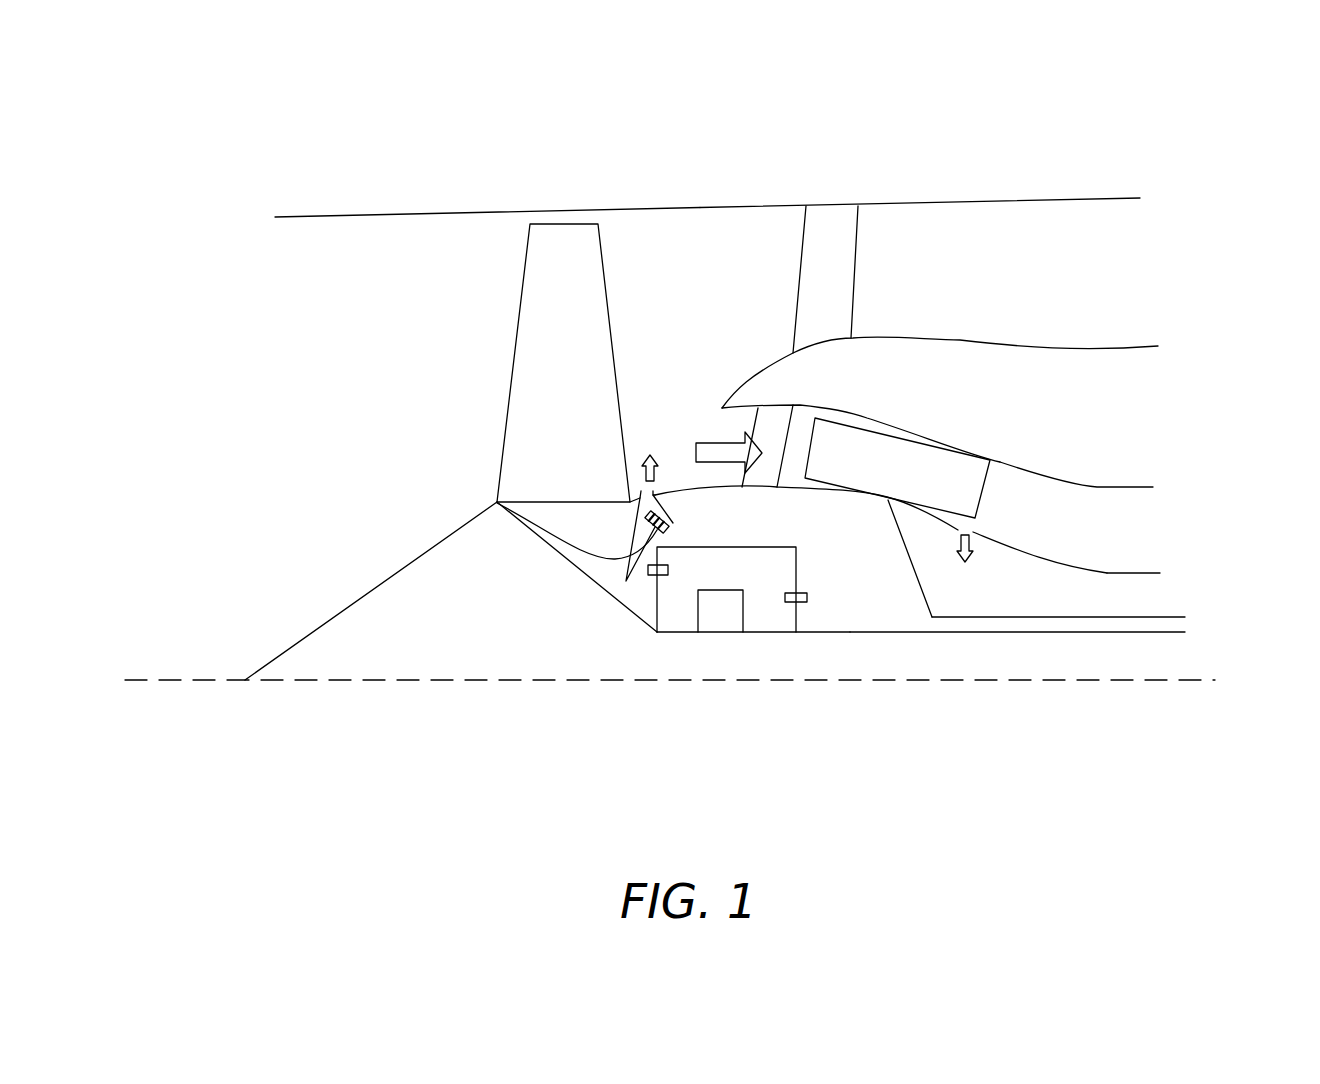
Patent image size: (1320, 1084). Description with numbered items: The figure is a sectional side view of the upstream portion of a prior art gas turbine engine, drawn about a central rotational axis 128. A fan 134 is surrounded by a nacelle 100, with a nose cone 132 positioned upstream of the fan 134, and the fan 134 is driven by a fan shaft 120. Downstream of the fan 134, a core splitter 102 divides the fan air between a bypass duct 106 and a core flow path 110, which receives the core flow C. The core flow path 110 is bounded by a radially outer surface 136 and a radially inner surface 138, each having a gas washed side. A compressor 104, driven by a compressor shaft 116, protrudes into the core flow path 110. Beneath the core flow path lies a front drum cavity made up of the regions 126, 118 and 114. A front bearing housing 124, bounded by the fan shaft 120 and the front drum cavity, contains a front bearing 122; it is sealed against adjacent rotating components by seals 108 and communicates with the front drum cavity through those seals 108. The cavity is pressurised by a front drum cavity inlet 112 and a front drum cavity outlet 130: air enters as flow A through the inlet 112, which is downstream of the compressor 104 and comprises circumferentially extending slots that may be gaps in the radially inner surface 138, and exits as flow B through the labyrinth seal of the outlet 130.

The nacelle 100 is at (340, 213).
The core splitter 102 is at (765, 383).
The compressor 104 is at (915, 460).
The bypass duct 106 is at (1035, 200).
The seals 108 is at (643, 570).
The core flow path 110 is at (1019, 489).
The front drum cavity inlet 112 is at (973, 532).
The region of front drum cavity 114 is at (1090, 590).
The compressor shaft 116 is at (1017, 617).
The region of front drum cavity 118 is at (877, 610).
The fan shaft 120 is at (826, 633).
The front bearing 122 is at (723, 617).
The front bearing housing 124 is at (677, 613).
The region of front drum cavity 126 is at (642, 585).
The central rotational axis 128 is at (467, 680).
The front drum cavity outlet 130 is at (497, 503).
The nose cone 132 is at (410, 563).
The fan 134 is at (535, 337).
The radially outer surface 136 is at (1127, 487).
The radially inner surface 138 is at (1143, 577).